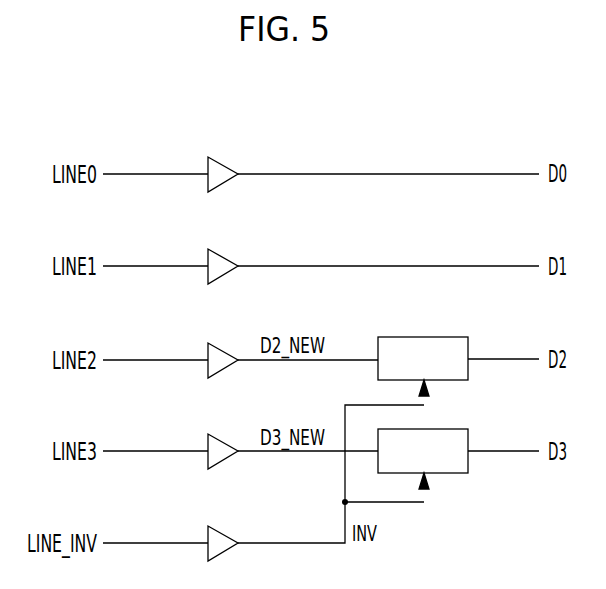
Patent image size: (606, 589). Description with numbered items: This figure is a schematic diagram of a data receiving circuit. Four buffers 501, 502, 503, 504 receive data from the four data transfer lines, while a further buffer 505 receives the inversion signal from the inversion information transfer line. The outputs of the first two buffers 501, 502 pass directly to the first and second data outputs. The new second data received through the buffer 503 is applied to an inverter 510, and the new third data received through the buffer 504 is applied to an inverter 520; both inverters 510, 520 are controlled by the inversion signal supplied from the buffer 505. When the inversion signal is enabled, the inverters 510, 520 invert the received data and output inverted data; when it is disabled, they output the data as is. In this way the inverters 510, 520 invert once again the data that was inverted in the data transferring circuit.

The buffer 501 is at (225, 157).
The buffer 502 is at (225, 249).
The buffer 503 is at (225, 343).
The buffer 504 is at (225, 434).
The buffer 505 is at (225, 526).
The inverter 510 is at (428, 337).
The inverter 520 is at (428, 429).